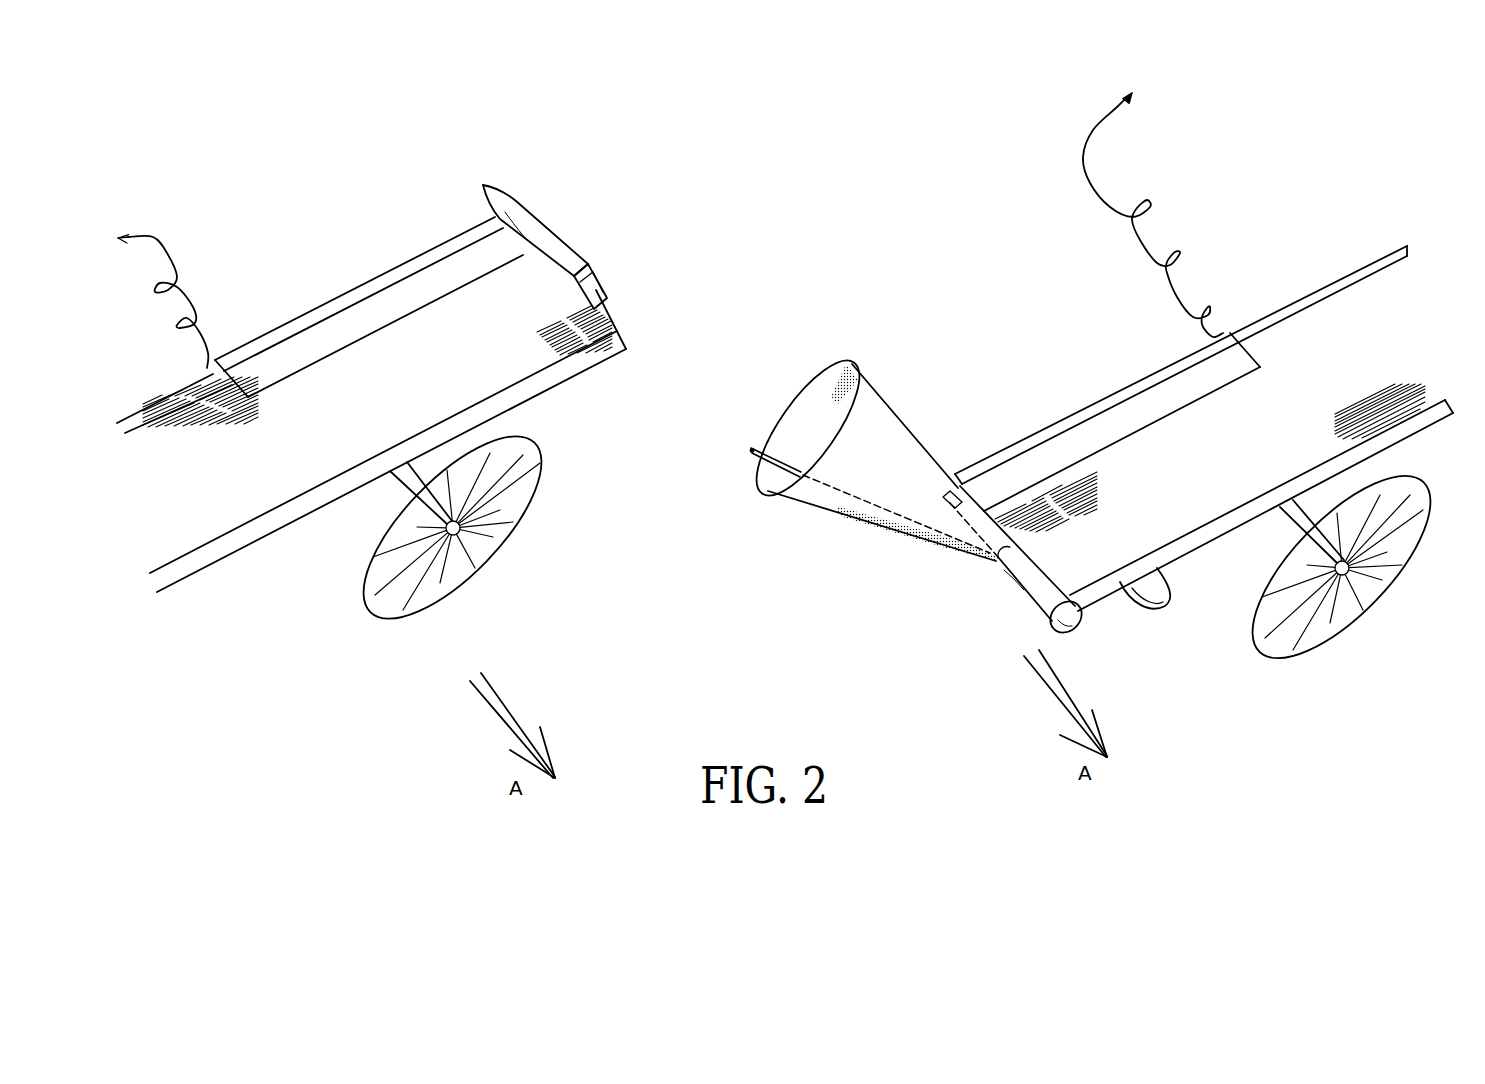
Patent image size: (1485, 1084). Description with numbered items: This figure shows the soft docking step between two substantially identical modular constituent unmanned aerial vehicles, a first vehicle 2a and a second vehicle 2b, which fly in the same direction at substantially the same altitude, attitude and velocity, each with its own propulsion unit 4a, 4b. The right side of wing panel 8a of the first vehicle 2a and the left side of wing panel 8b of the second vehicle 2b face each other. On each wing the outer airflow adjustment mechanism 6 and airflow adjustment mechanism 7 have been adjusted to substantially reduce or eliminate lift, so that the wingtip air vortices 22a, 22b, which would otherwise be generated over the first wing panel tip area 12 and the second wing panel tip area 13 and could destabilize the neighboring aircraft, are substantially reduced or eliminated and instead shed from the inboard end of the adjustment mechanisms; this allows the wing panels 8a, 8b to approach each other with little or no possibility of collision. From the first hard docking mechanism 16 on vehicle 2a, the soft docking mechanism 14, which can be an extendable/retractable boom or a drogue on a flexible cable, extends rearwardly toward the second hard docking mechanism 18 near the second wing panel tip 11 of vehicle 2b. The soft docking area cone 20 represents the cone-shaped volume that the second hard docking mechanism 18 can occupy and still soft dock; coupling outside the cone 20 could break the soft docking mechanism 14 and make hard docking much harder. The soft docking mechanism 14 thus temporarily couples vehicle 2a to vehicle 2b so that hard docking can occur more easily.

The first modular constituent unmanned aerial vehicle 2a is at (1253, 290).
The second modular constituent unmanned aerial vehicle 2b is at (228, 580).
The propulsion unit 4a is at (1262, 650).
The propulsion unit 4b is at (492, 557).
The first airflow adjustment mechanism 6 is at (1008, 445).
The second airflow adjustment mechanism 7 is at (310, 312).
The wing panel 8a is at (1293, 423).
The wing panel 8b is at (252, 480).
The second wing panel tip 11 is at (607, 310).
The first wing panel tip area 12 is at (1108, 494).
The second wing panel tip area 13 is at (477, 333).
The soft docking mechanism 14 is at (762, 463).
The first hard docking mechanism 16 is at (1007, 570).
The second hard docking mechanism 18 is at (528, 203).
The soft docking area cone 20 is at (872, 378).
The vortices 22a is at (1085, 187).
The vortices 22b is at (167, 250).